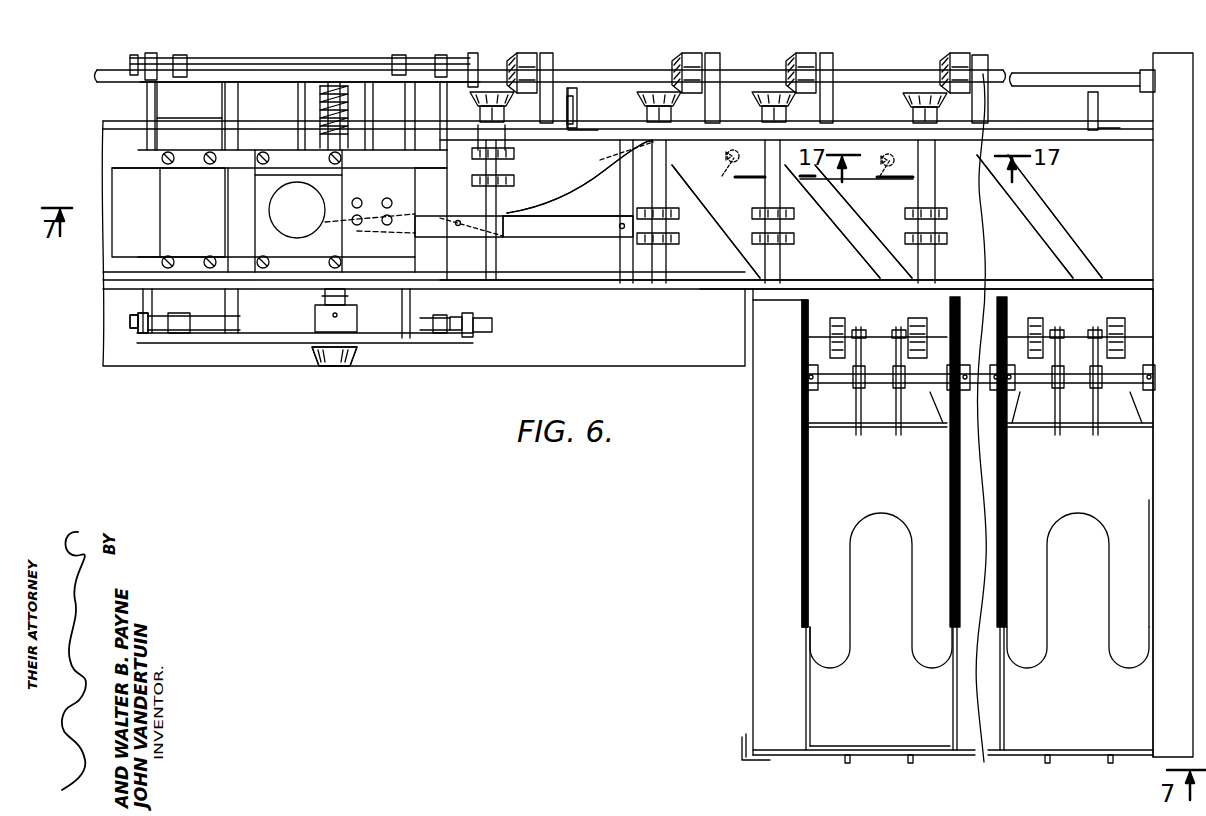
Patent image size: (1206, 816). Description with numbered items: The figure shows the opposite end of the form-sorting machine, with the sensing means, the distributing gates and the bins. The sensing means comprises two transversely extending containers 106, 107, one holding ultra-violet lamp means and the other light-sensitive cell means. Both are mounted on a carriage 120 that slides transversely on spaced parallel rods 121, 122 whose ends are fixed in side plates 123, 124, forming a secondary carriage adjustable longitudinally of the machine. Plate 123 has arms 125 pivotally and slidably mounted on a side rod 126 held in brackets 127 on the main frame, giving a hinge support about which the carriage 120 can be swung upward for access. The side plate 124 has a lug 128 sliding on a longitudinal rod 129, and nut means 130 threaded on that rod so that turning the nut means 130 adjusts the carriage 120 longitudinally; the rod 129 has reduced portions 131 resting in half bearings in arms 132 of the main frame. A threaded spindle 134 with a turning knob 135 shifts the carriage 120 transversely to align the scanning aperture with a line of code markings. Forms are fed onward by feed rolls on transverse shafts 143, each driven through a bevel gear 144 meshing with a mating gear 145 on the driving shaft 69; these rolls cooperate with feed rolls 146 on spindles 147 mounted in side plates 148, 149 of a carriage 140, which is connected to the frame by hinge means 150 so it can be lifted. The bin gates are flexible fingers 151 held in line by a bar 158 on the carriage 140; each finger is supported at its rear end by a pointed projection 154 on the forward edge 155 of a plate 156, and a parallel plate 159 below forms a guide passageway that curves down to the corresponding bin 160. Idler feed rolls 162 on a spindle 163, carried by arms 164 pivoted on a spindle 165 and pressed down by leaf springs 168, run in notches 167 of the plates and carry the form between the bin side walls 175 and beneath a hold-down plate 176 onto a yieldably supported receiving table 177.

The driving shaft 69 is at (110, 70).
The container 106 is at (122, 181).
The container 107 is at (278, 168).
The carriage 120 is at (403, 202).
The rod 121 is at (412, 152).
The rod 122 is at (148, 102).
The side plate 123 is at (408, 49).
The side plate 124 is at (390, 334).
The arms 125 is at (152, 53).
The side rod 126 is at (292, 58).
The brackets 127 is at (184, 56).
The lug 128 is at (467, 318).
The longitudinal rod 129 is at (492, 327).
The nut means 130 is at (133, 321).
The reduced portions 131 is at (185, 332).
The arms 132 is at (188, 310).
The spindle 134 is at (338, 86).
The turning knob 135 is at (338, 362).
The carriage 140 is at (562, 276).
The transverse shafts 143 is at (505, 118).
The bevel gear 144 is at (493, 90).
The gears 145 is at (518, 60).
The feed rolls 146 is at (513, 157).
The spindles 147 is at (512, 180).
The side plate 148 is at (604, 132).
The side plate 149 is at (527, 277).
The hinge means 150 is at (578, 102).
The fingers 151 is at (587, 195).
The pointed projection 154 is at (730, 168).
The forward edge 155 is at (845, 240).
The plate 156 is at (873, 255).
The bar 158 is at (610, 230).
The plate 159 is at (790, 233).
The bin 160 is at (812, 398).
The idler feed rolls 162 is at (850, 325).
The spindle 163 is at (890, 336).
The arms 164 is at (843, 392).
The spindle 165 is at (1151, 388).
The notches 167 is at (828, 326).
The leaf springs 168 is at (897, 428).
The bin side walls 175 is at (802, 548).
The hold-down plate 176 is at (893, 505).
The receiving table 177 is at (817, 698).